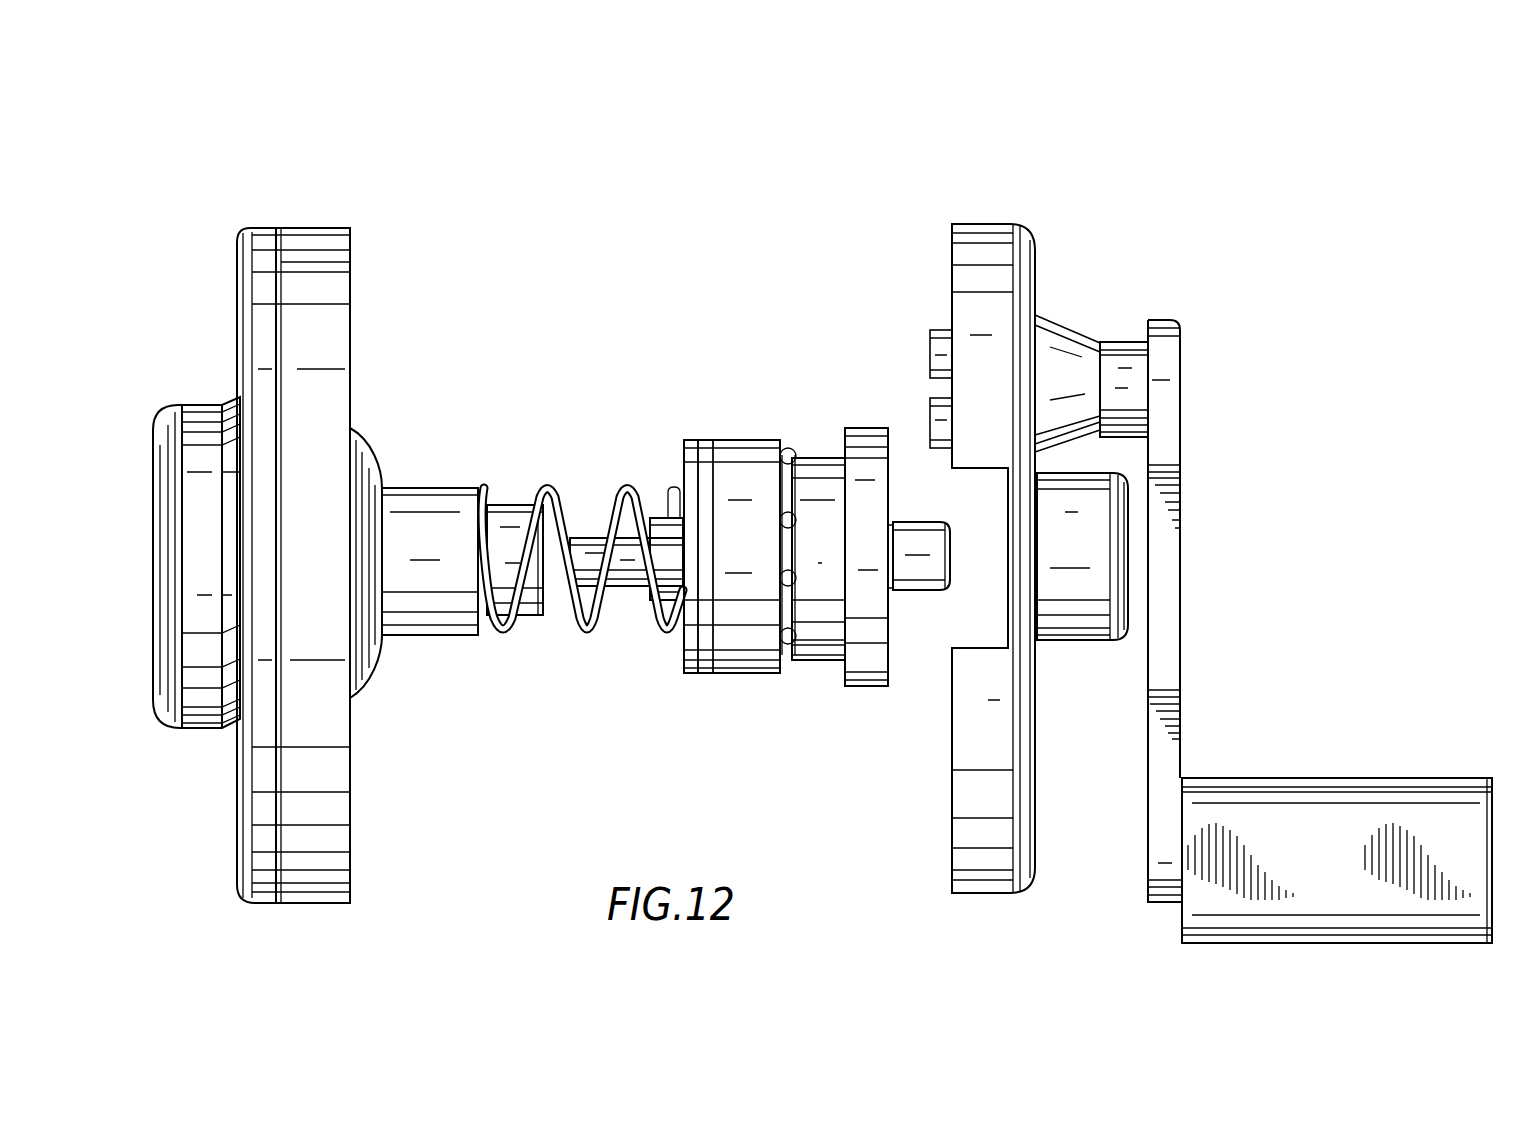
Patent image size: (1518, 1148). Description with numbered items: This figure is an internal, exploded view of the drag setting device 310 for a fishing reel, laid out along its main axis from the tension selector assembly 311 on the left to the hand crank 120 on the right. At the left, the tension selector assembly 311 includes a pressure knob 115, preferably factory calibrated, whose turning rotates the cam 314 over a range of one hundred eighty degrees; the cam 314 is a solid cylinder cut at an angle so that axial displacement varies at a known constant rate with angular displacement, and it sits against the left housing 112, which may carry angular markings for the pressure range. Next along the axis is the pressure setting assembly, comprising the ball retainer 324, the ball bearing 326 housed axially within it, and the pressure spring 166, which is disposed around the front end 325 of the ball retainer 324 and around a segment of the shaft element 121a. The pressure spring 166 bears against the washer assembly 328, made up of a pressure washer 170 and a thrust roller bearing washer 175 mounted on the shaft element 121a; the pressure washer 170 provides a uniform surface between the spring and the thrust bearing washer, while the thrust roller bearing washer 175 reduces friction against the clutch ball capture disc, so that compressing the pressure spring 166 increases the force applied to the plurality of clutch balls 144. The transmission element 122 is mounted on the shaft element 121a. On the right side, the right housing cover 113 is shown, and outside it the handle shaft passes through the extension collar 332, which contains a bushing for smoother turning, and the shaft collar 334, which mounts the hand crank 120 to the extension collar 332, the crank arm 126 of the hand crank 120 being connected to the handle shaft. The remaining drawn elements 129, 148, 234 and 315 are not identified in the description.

The left housing 112 is at (308, 226).
The right housing cover 113 is at (996, 223).
The pressure knob 115 is at (180, 402).
The hand crank 120 is at (1203, 551).
The shaft element 121a is at (620, 590).
The transmission element 122 is at (825, 618).
The crank arm 126 is at (1181, 462).
The base 129 is at (1346, 778).
The clutch balls 144 is at (791, 453).
The clutch housing 148 is at (801, 662).
The pressure spring 166 is at (561, 490).
The pressure washer 170 is at (693, 676).
The thrust roller bearing washer 175 is at (712, 676).
The flange 234 is at (856, 428).
The device 310 is at (604, 326).
The tension selector assembly 311 is at (204, 737).
The cam 314 is at (355, 341).
The boss 315 is at (368, 446).
The ball retainer 324 is at (426, 490).
The front end 325 is at (512, 502).
The ball bearing 326 is at (380, 648).
The washer assembly 328 is at (740, 418).
The extension collar 332 is at (1062, 321).
The shaft collar 334 is at (1126, 344).